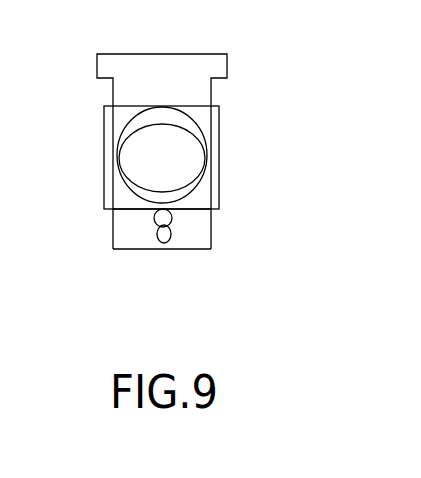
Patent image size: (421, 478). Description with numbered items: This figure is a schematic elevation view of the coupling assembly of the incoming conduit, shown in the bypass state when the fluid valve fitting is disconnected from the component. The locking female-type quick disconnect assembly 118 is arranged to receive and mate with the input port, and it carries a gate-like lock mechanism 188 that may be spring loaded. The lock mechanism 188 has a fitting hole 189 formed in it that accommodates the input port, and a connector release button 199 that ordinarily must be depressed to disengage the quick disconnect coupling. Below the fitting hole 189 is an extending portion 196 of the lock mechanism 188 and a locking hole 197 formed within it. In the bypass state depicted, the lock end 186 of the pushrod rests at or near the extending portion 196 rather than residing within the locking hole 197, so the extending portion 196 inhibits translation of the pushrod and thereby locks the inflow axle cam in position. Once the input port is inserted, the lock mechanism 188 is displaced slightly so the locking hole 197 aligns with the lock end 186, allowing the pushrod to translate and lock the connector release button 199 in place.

The connector release button 199 is at (106, 66).
The lock mechanism 188 is at (215, 93).
The quick disconnect assembly 118 is at (104, 189).
The fitting hole 189 is at (140, 188).
The extending portion 196 is at (125, 230).
The locking hole 197 is at (170, 220).
The lock end 186 is at (171, 238).